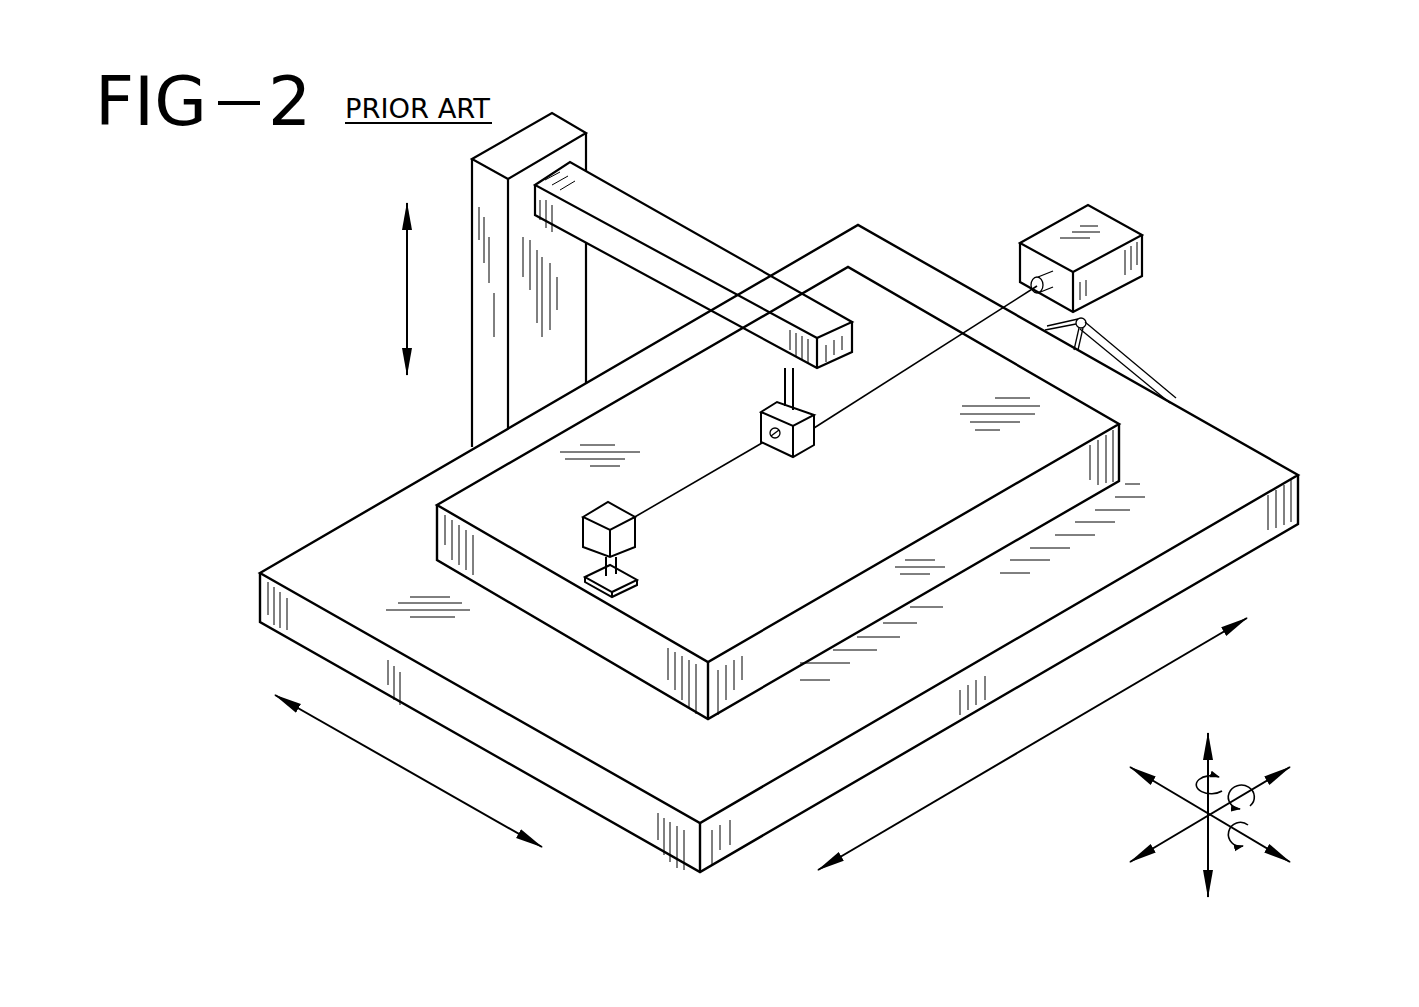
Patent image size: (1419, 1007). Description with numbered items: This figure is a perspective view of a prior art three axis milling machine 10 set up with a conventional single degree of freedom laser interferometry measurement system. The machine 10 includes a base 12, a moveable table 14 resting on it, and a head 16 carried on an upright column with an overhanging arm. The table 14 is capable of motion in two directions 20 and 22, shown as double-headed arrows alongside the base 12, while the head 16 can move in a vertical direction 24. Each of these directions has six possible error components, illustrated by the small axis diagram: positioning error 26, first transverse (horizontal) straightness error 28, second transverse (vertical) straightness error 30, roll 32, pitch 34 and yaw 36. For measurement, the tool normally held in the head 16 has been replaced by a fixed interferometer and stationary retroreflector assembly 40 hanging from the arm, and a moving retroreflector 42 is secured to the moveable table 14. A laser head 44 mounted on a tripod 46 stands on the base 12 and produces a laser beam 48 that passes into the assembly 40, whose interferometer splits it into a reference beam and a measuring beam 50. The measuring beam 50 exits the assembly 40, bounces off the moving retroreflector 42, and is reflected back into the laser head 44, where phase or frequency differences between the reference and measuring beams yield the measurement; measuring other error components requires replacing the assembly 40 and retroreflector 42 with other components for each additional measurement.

The machine 10 is at (335, 418).
The base 12 is at (367, 600).
The moveable table 14 is at (1087, 453).
The head 16 is at (800, 313).
The direction 20 is at (907, 818).
The direction 22 is at (407, 772).
The direction 24 is at (407, 283).
The positioning error 26 is at (1180, 835).
The first transverse (horizontal) straightness error 28 is at (1173, 795).
The second transverse (vertical) straightness error 30 is at (1213, 853).
The roll 32 is at (1253, 800).
The pitch 34 is at (1250, 826).
The yaw 36 is at (1200, 775).
The fixed interferometer and stationary retroreflector assembly 40 is at (808, 438).
The moving retroreflector 42 is at (628, 537).
The laser head 44 is at (1095, 232).
The tripod 46 is at (1112, 340).
The laser beam 48 is at (913, 353).
The measuring beam 50 is at (700, 482).